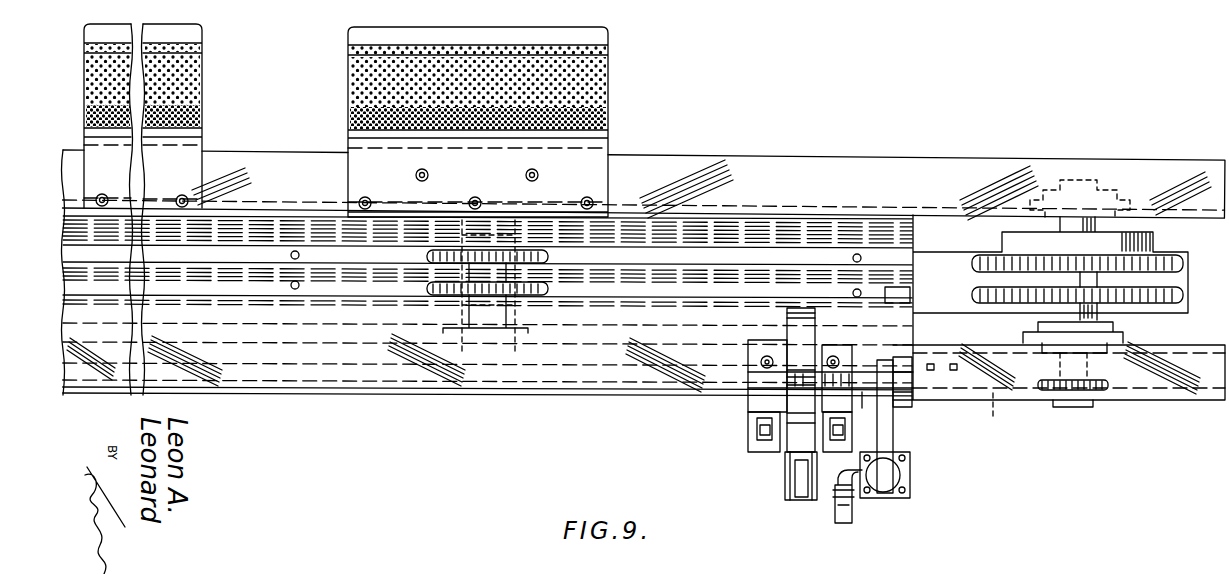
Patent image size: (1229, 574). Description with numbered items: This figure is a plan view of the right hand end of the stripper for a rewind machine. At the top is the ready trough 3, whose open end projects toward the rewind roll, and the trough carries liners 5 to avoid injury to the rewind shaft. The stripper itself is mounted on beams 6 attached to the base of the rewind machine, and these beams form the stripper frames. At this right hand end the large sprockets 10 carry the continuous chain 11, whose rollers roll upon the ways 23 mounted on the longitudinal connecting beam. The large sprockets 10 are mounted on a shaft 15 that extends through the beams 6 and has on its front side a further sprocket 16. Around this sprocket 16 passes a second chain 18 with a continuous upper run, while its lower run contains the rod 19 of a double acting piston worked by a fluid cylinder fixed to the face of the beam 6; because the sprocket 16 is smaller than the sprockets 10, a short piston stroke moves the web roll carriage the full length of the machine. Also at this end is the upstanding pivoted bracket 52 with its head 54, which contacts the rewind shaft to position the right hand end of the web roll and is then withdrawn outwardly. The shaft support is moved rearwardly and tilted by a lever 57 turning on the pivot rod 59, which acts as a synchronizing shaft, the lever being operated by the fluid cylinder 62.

The ready trough 3 is at (202, 98).
The liners 5 is at (363, 82).
The beams 6 is at (890, 165).
The sprockets 10 is at (1185, 295).
The chain 11 is at (232, 303).
The shaft 15 is at (1088, 180).
The sprocket 16 is at (1050, 392).
The chain 18 is at (999, 422).
The rod 19 is at (338, 366).
The ways 23 is at (335, 255).
The pivoted bracket 52 is at (790, 322).
The head 54 is at (800, 310).
The lever 57 is at (890, 425).
The pivot rod 59 is at (600, 368).
The fluid cylinder 62 is at (910, 476).